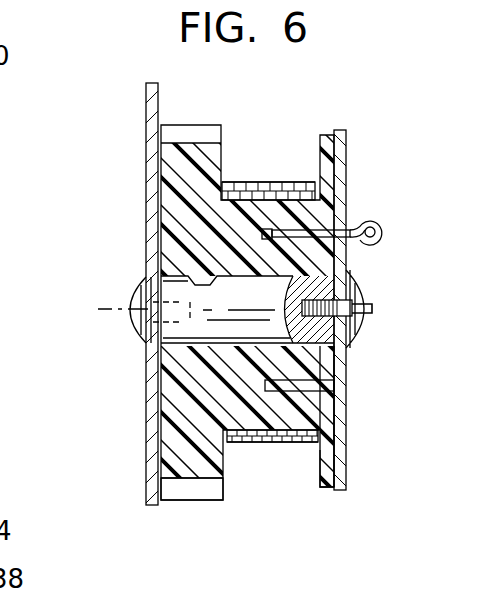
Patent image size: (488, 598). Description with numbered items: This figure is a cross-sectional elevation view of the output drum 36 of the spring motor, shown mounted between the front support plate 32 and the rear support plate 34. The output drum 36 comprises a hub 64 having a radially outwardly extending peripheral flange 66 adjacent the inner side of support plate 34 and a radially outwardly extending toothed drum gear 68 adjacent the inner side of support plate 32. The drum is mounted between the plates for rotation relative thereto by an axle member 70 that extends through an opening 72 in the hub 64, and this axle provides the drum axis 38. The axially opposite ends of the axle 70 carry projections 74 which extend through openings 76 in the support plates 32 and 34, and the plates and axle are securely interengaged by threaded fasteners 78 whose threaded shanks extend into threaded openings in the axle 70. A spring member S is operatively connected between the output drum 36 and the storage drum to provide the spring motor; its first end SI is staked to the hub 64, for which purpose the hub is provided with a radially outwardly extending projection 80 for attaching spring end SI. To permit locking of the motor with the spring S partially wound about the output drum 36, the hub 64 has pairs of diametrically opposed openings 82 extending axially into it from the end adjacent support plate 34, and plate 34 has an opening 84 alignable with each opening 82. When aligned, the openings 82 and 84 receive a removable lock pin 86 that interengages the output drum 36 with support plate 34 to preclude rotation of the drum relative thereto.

The front support plate 32 is at (146, 129).
The rear support plate 34 is at (341, 157).
The output drum 36 is at (332, 414).
The drum axis 38 is at (372, 309).
The hub 64 is at (265, 420).
The peripheral flange 66 is at (330, 468).
The toothed drum gear 68 is at (196, 492).
The axle member 70 is at (205, 340).
The opening 72 is at (178, 277).
The projections 74 is at (140, 330).
The openings 76 is at (140, 295).
The threaded fasteners 78 is at (372, 313).
The projection 80 is at (270, 200).
The openings 82 is at (262, 233).
The opening 84 is at (366, 220).
The lock pin 86 is at (380, 221).
The spring member S is at (297, 455).
The first end of spring SI is at (243, 183).